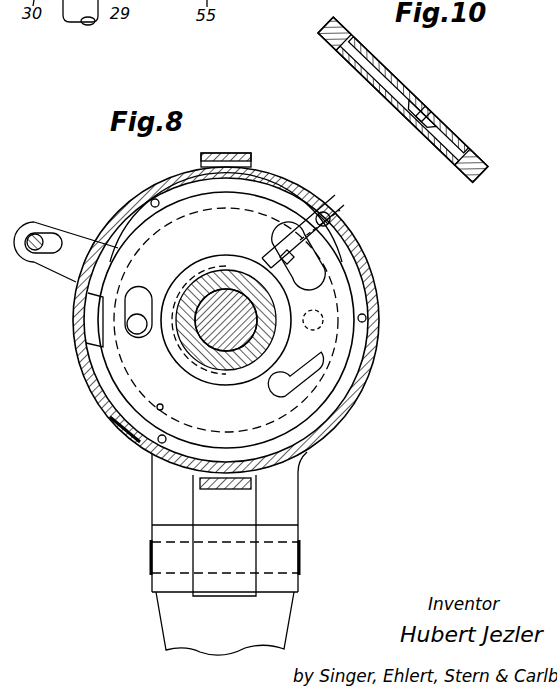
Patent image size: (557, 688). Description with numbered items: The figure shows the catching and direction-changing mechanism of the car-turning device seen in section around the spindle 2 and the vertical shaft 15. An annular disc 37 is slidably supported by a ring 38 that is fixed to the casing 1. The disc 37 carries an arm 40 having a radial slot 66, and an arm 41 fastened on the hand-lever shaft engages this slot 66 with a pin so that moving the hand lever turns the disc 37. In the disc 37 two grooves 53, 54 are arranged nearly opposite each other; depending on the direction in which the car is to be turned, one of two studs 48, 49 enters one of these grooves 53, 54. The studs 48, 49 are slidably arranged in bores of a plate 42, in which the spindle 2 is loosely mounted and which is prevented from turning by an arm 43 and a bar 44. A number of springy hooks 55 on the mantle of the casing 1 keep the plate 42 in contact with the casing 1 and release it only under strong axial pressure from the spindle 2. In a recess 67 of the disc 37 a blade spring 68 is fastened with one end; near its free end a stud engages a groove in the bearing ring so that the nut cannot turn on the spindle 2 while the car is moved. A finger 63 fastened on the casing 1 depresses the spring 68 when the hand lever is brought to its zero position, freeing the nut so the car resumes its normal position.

In FIG. 8, the casing 1 is at (117, 427).
In FIG. 8, the spindle 2 is at (268, 316).
In FIG. 8, the vertical shaft 15 is at (200, 330).
In FIG. 8, the annular disc 37 is at (283, 407).
In FIG. 10, the annular disc 37 is at (368, 86).
In FIG. 8, the ring 38 is at (140, 437).
In FIG. 8, the arm 40 is at (78, 237).
In FIG. 8, the arm 41 is at (37, 233).
In FIG. 8, the plate 42 is at (372, 258).
In FIG. 8, the arm 43 is at (300, 487).
In FIG. 8, the bar 44 is at (290, 612).
In FIG. 8, the stud 48 is at (325, 312).
In FIG. 8, the stud 49 is at (131, 326).
In FIG. 8, the groove 53 is at (125, 308).
In FIG. 8, the groove 54 is at (318, 368).
In FIG. 8, the springy hook 55 is at (240, 153).
In FIG. 8, the finger 63 is at (298, 235).
In FIG. 8, the radial slot 66 is at (46, 254).
In FIG. 8, the recess 67 is at (325, 298).
In FIG. 10, the recess 67 is at (398, 101).
In FIG. 8, the blade spring 68 is at (188, 232).
In FIG. 10, the blade spring 68 is at (390, 75).